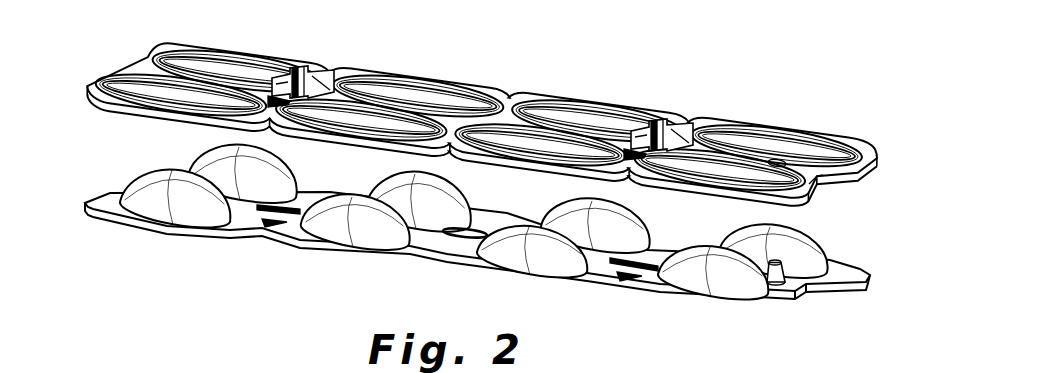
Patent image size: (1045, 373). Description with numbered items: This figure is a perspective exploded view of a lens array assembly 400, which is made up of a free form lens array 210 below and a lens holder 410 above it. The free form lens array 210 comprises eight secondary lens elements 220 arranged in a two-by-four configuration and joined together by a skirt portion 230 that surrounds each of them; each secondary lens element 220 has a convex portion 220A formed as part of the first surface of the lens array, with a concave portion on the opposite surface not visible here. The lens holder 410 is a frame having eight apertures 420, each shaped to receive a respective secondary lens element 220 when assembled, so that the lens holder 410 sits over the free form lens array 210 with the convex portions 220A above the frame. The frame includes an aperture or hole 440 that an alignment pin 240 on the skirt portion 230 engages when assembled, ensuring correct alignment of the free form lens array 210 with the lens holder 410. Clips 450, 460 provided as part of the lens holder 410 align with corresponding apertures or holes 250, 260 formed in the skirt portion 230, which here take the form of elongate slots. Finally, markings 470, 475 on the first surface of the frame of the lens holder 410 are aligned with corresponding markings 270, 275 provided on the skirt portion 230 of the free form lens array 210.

The free form lens array 210 is at (112, 217).
The secondary lens element 220 is at (183, 198).
The convex portion 220A is at (370, 233).
The skirt portion 230 is at (747, 303).
The alignment pin 240 is at (783, 282).
The aperture or hole 250 is at (300, 211).
The aperture or hole 260 is at (653, 268).
The marking 270 is at (272, 222).
The marking 275 is at (622, 278).
The lens array assembly 400 is at (487, 115).
The lens holder 410 is at (522, 112).
The aperture 420 is at (430, 100).
The aperture or hole 440 is at (802, 180).
The clip 450 is at (317, 75).
The clip 460 is at (668, 128).
The marking 470 is at (276, 104).
The marking 475 is at (627, 158).